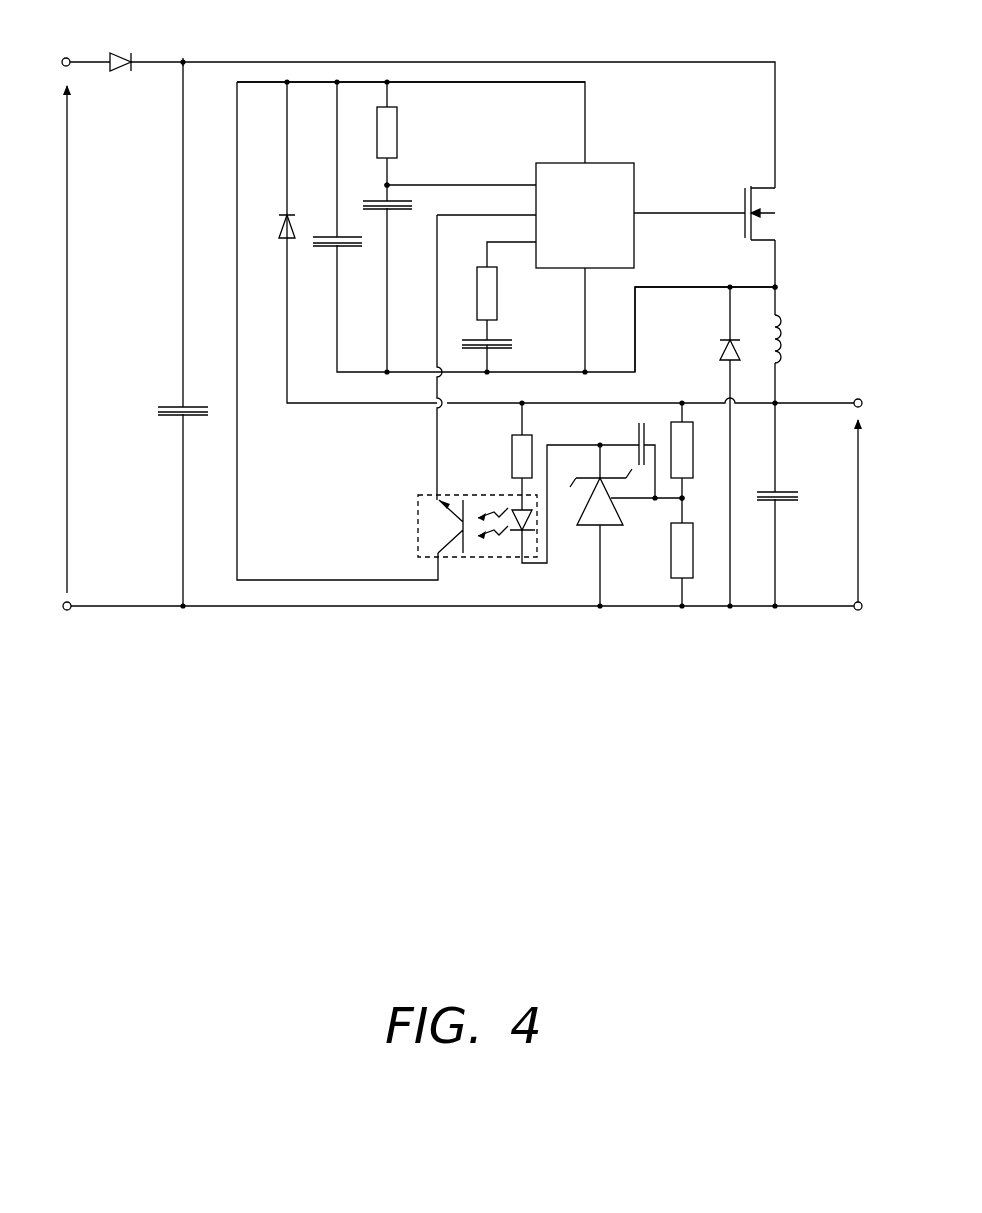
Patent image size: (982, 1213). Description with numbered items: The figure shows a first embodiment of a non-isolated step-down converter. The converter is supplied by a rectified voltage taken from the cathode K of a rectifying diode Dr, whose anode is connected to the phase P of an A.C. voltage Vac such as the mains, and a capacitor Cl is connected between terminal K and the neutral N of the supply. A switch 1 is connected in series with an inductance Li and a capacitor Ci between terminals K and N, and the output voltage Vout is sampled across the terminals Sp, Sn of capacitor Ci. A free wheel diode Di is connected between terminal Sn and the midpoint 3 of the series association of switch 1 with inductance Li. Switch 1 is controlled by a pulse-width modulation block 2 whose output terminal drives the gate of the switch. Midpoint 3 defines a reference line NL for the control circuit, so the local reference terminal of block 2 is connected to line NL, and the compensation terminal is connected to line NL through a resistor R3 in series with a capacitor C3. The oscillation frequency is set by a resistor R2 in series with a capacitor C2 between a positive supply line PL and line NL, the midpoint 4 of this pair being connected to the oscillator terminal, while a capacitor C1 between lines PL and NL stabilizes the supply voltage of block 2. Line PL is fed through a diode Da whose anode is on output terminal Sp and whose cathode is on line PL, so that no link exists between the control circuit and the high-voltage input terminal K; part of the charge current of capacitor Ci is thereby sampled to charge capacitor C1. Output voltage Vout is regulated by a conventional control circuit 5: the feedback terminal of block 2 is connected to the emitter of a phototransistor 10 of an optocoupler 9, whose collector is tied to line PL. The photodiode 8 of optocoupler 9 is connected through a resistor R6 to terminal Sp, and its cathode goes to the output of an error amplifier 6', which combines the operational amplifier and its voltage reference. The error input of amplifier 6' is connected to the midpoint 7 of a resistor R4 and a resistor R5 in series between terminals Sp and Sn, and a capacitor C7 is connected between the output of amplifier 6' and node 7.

The switch 1 is at (800, 202).
The pulse-width modulation block 2 is at (625, 163).
The midpoint 3 is at (778, 286).
The midpoint 4 is at (390, 184).
The control circuit 5 is at (410, 462).
The error amplifier 6' is at (615, 518).
The midpoint 7 is at (686, 498).
The photodiode 8 is at (512, 504).
The optocoupler 9 is at (488, 557).
The phototransistor 10 is at (428, 530).
The phase P is at (67, 57).
The neutral N is at (67, 611).
The cathode K is at (183, 59).
The rectifying diode Dr is at (123, 49).
The A.C. voltage Vac is at (90, 339).
The capacitor Cl is at (184, 397).
The diode Da is at (273, 240).
The capacitor C1 is at (341, 239).
The resistor R2 is at (403, 132).
The capacitor C2 is at (392, 217).
The positive supply line PL is at (503, 82).
The resistor R3 is at (503, 293).
The capacitor C3 is at (505, 343).
The reference line NL is at (665, 287).
The free wheel diode Di is at (713, 350).
The inductance Li is at (791, 339).
The output terminal Sp is at (857, 398).
The output terminal Sn is at (855, 611).
The output voltage Vout is at (885, 511).
The capacitor Ci is at (780, 495).
The resistor R4 is at (698, 450).
The resistor R5 is at (698, 550).
The capacitor C7 is at (626, 439).
The resistor R6 is at (504, 456).